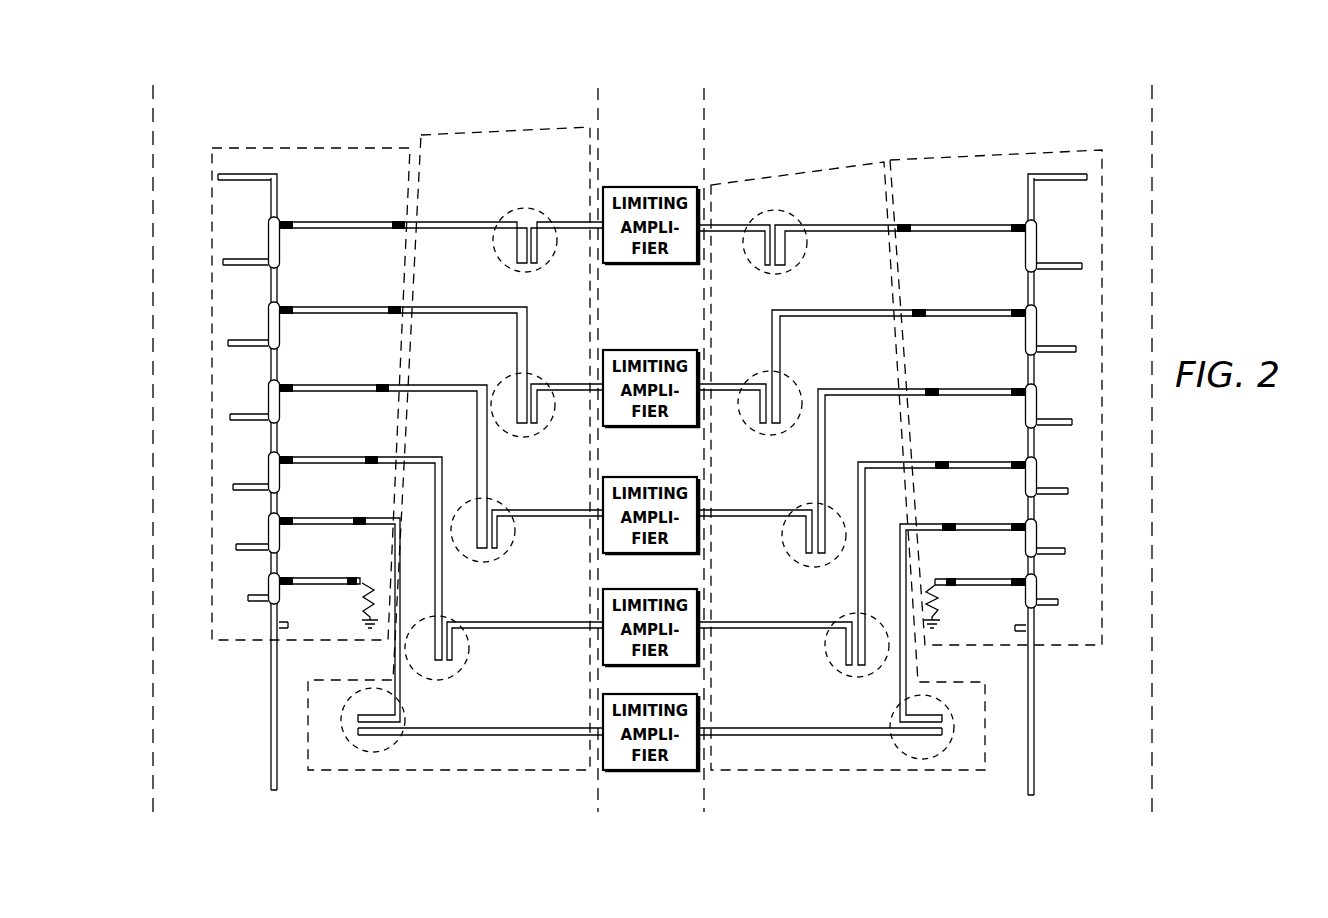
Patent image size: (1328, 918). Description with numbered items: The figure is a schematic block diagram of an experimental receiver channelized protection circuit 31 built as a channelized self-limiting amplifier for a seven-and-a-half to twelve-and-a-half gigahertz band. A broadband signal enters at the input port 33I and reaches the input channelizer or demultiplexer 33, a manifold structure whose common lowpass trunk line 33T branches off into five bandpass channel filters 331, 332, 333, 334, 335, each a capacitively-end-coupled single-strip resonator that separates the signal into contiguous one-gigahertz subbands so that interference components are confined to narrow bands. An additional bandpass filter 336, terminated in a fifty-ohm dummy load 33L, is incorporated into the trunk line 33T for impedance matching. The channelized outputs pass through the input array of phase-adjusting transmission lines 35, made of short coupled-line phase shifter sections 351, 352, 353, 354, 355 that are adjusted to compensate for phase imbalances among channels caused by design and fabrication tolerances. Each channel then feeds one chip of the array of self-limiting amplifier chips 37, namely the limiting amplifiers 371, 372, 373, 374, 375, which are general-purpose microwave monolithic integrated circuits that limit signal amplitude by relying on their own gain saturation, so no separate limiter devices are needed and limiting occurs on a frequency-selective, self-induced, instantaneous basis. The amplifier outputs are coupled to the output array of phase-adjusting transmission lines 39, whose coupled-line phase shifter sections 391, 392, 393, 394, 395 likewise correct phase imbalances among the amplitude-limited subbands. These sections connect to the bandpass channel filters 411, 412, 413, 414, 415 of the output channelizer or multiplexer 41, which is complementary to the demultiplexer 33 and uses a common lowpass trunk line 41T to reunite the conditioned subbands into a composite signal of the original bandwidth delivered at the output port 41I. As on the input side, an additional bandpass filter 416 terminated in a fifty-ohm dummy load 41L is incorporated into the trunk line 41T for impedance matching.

The receiver channelized protection circuit 31 is at (257, 40).
The input channelizer or demultiplexer 33 is at (333, 147).
The common lowpass trunk line 33T is at (270, 712).
The input port 33I is at (269, 823).
The bandpass channel filter 335 is at (376, 232).
The bandpass channel filter 334 is at (366, 318).
The bandpass channel filter 333 is at (362, 396).
The bandpass channel filter 332 is at (356, 466).
The bandpass channel filter 331 is at (342, 530).
The additional bandpass filter 336 is at (332, 588).
The dummy load 33L is at (362, 610).
The input array of phase-adjusting transmission lines 35 is at (517, 129).
The phase shifter section 355 is at (500, 266).
The phase shifter section 354 is at (552, 428).
The phase shifter section 353 is at (520, 540).
The phase shifter section 352 is at (470, 655).
The phase shifter section 351 is at (406, 716).
The array of self-limiting amplifier chips 37 is at (701, 81).
The limiting amplifier 375 is at (670, 266).
The limiting amplifier 374 is at (672, 349).
The limiting amplifier 373 is at (676, 476).
The limiting amplifier 372 is at (676, 588).
The limiting amplifier 371 is at (672, 772).
The output array of phase-adjusting transmission lines 39 is at (811, 170).
The phase shifter section 395 is at (830, 284).
The phase shifter section 394 is at (800, 376).
The phase shifter section 393 is at (798, 504).
The phase shifter section 392 is at (848, 615).
The phase shifter section 391 is at (895, 720).
The output channelizer or multiplexer 41 is at (984, 152).
The common lowpass trunk line 41T is at (1035, 716).
The output port 41I is at (1019, 808).
The bandpass channel filter 415 is at (992, 234).
The bandpass channel filter 414 is at (994, 318).
The bandpass channel filter 413 is at (996, 398).
The bandpass channel filter 412 is at (1000, 470).
The bandpass channel filter 411 is at (1000, 532).
The additional bandpass filter 416 is at (1014, 588).
The dummy load 41L is at (942, 614).